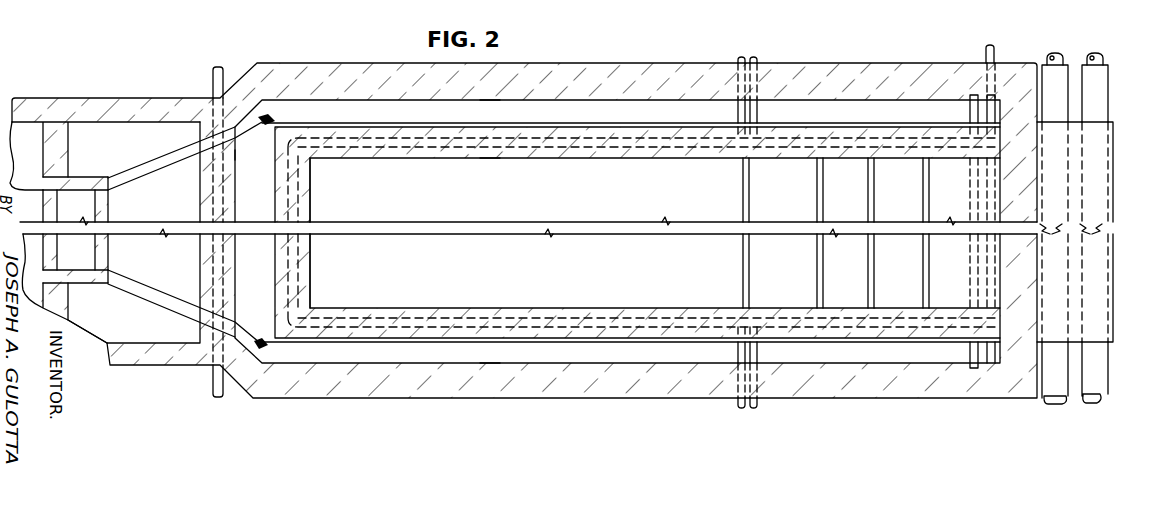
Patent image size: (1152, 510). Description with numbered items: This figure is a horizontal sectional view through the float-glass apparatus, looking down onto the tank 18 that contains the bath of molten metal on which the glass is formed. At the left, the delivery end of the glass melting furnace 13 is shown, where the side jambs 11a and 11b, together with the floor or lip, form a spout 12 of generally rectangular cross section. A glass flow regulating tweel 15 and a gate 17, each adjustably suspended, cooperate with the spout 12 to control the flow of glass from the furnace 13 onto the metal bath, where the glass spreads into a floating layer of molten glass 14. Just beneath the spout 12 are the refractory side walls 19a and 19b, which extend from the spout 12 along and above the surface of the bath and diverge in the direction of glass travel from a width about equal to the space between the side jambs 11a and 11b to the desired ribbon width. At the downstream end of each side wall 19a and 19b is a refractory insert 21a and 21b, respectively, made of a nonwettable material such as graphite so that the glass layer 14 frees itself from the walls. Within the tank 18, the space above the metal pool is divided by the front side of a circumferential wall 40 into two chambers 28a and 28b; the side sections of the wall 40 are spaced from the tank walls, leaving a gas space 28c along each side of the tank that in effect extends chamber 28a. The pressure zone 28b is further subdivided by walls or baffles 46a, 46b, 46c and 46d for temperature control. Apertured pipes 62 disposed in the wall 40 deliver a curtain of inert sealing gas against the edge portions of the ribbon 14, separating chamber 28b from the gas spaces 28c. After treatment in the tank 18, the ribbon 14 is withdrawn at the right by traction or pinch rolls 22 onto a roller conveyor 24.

The glass melting furnace 13 is at (43, 96).
The glass flow regulating tweel 15 is at (43, 200).
The side jamb 11a is at (82, 184).
The side jamb 11b is at (82, 284).
The gate 17 is at (95, 208).
The refractory side wall 19a is at (157, 171).
The refractory side wall 19b is at (158, 292).
The spout 12 is at (100, 286).
The tank 18 is at (303, 63).
The layer of molten glass 14 is at (366, 123).
The refractory insert 21a is at (264, 127).
The refractory insert 21b is at (260, 339).
The chamber 28a is at (261, 214).
The chamber 28b is at (495, 211).
The gas space 28c is at (486, 121).
The circumferential wall 40 is at (367, 160).
The baffle 46a is at (745, 246).
The baffle 46b is at (816, 196).
The baffle 46c is at (867, 194).
The baffle 46d is at (922, 192).
The apertured pipe 62 is at (830, 325).
The traction or pinch rolls 22 is at (1041, 394).
The roller conveyor 24 is at (1085, 394).